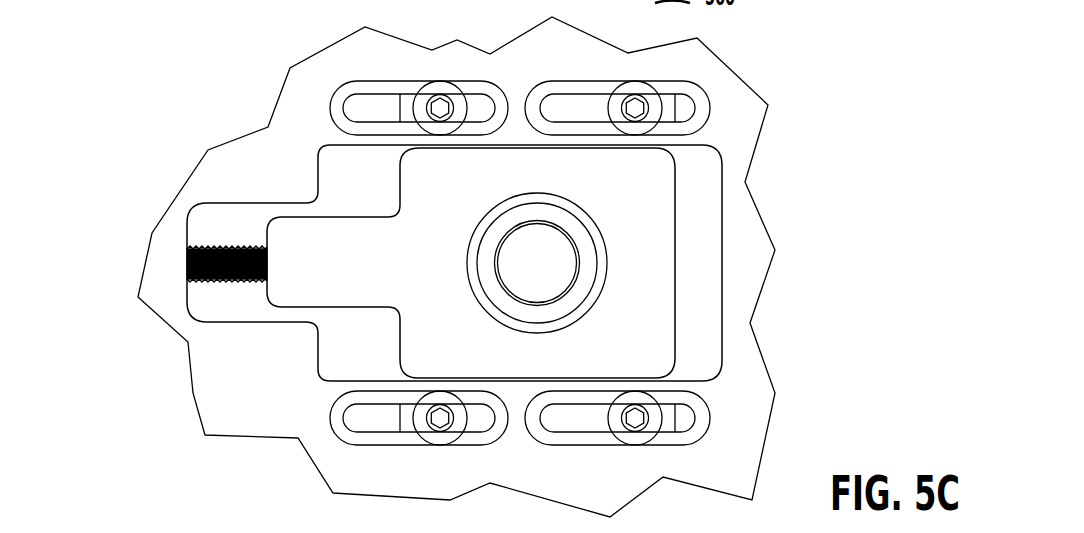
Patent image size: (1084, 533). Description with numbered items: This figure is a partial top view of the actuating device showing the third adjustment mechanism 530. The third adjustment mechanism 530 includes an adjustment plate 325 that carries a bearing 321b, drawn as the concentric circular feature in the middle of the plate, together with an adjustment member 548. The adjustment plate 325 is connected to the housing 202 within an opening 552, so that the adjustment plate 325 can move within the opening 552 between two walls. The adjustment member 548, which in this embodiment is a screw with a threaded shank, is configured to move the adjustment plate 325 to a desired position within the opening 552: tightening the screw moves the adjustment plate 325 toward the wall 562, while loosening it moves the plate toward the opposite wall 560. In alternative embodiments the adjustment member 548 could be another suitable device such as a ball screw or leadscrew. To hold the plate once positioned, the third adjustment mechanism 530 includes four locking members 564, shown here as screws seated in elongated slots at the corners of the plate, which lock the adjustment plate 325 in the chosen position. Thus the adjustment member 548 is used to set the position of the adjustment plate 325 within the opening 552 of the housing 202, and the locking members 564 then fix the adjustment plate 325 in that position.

The housing 202 is at (288, 410).
The bearing 321b is at (575, 237).
The adjustment plate 325 is at (655, 335).
The third adjustment mechanism 530 is at (770, 35).
The adjustment member 548 is at (218, 248).
The opening 552 is at (359, 175).
The wall 560 is at (723, 202).
The wall 562 is at (317, 347).
The locking members 564 is at (450, 104).